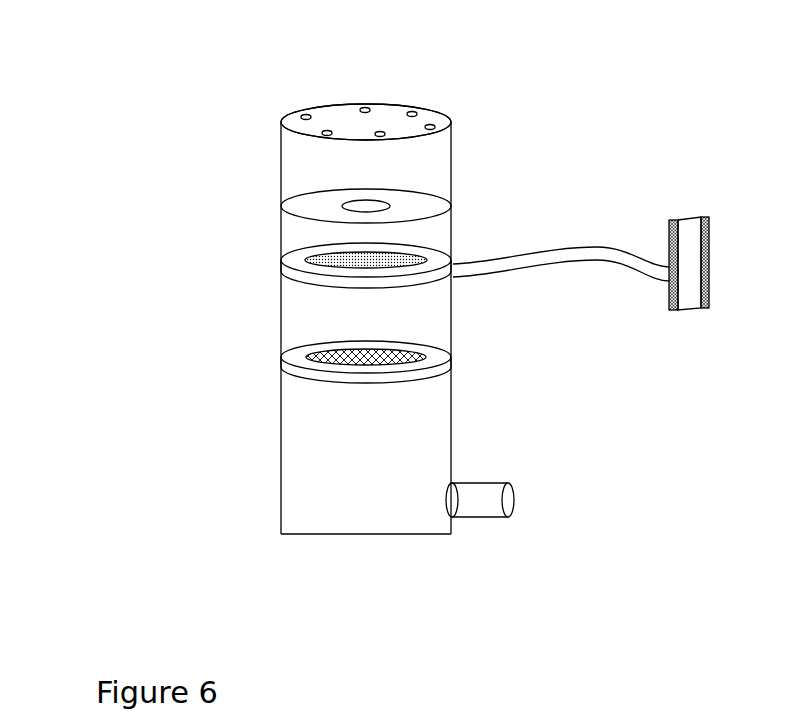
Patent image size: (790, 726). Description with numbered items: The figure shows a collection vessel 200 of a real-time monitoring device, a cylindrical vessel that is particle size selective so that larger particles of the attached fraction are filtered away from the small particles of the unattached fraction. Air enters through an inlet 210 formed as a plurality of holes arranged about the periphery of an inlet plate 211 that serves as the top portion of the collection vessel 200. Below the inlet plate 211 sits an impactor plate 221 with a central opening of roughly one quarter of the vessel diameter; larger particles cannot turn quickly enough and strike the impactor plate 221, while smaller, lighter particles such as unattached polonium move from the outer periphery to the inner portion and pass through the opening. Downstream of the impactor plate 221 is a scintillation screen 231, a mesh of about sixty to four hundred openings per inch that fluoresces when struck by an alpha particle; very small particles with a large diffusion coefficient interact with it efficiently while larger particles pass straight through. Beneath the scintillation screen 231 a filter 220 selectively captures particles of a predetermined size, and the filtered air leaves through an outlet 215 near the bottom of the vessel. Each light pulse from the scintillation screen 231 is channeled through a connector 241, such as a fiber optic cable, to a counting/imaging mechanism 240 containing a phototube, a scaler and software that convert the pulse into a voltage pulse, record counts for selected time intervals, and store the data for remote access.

The collection vessel 200 is at (58, 130).
The inlet 210 is at (305, 116).
The inlet plate 211 is at (450, 117).
The impactor plate 221 is at (281, 203).
The scintillation screen 231 is at (281, 256).
The filter 220 is at (281, 364).
The connector 241 is at (530, 275).
The counting/imaging mechanism 240 is at (683, 218).
The outlet 215 is at (514, 499).